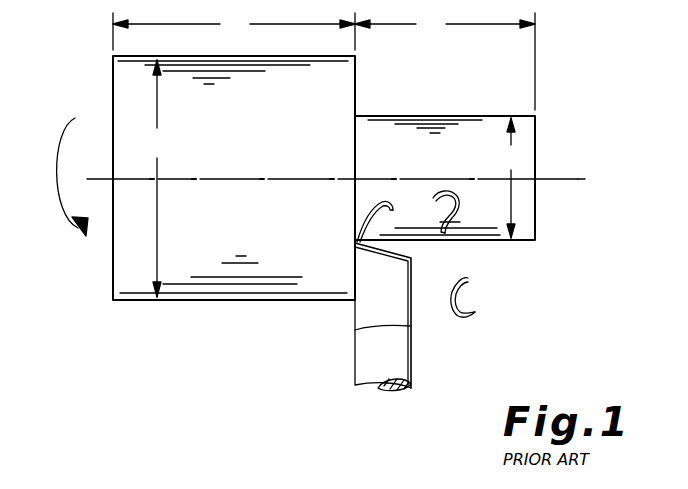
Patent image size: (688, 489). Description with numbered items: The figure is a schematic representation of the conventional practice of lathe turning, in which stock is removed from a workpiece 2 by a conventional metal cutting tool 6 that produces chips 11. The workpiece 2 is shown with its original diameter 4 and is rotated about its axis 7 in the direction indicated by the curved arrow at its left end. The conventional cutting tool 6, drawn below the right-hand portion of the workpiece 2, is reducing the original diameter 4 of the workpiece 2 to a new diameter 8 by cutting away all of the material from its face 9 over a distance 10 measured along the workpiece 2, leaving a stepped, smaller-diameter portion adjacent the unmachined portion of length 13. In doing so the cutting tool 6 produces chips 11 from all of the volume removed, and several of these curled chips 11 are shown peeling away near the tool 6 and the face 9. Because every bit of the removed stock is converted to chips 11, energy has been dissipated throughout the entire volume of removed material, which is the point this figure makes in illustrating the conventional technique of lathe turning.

The workpiece 2 is at (241, 137).
The original diameter 4 is at (157, 178).
The cutting tool 6 is at (399, 300).
The axis 7 is at (571, 180).
The new diameter 8 is at (511, 178).
The face 9 is at (536, 143).
The distance 10 is at (445, 61).
The chips 11 is at (460, 212).
The length of unmachined portion 13 is at (234, 31).